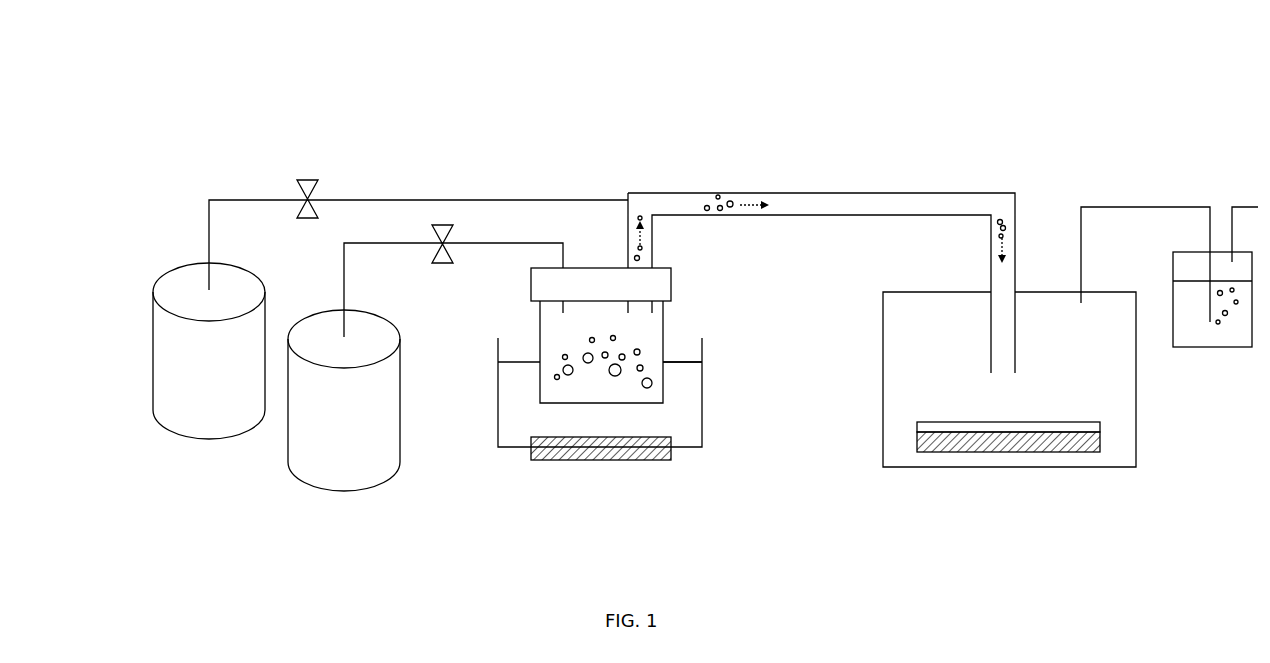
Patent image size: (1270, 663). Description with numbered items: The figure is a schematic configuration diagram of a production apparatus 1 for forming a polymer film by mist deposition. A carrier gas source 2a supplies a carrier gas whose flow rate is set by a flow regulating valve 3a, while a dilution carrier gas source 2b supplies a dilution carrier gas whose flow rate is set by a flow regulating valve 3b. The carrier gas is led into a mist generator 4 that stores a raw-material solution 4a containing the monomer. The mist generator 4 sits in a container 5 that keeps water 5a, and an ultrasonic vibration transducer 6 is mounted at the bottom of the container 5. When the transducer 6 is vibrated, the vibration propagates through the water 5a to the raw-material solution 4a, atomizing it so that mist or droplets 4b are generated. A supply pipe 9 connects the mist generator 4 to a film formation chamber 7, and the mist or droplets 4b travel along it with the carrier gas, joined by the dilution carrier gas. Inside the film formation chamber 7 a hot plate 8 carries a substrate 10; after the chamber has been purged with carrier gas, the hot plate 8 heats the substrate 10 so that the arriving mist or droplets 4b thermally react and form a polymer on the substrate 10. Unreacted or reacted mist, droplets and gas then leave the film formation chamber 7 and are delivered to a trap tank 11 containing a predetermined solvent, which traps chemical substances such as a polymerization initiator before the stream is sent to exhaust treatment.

The production apparatus 1 is at (390, 48).
The carrier gas source 2a is at (300, 457).
The dilution carrier gas source 2b is at (166, 368).
The flow regulating valve 3a is at (433, 263).
The flow regulating valve 3b is at (305, 178).
The mist generator 4 is at (537, 333).
The raw-material solution 4a is at (545, 392).
The mist or droplets 4b is at (717, 195).
The container 5 is at (705, 400).
The water 5a is at (678, 370).
The ultrasonic vibration transducer 6 is at (600, 460).
The film formation chamber 7 is at (1053, 292).
The hot plate 8 is at (1075, 452).
The supply pipe 9 is at (868, 193).
The substrate 10 is at (930, 422).
The trap tank 11 is at (1218, 347).